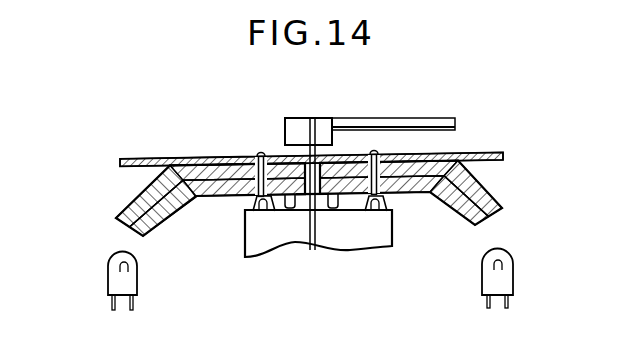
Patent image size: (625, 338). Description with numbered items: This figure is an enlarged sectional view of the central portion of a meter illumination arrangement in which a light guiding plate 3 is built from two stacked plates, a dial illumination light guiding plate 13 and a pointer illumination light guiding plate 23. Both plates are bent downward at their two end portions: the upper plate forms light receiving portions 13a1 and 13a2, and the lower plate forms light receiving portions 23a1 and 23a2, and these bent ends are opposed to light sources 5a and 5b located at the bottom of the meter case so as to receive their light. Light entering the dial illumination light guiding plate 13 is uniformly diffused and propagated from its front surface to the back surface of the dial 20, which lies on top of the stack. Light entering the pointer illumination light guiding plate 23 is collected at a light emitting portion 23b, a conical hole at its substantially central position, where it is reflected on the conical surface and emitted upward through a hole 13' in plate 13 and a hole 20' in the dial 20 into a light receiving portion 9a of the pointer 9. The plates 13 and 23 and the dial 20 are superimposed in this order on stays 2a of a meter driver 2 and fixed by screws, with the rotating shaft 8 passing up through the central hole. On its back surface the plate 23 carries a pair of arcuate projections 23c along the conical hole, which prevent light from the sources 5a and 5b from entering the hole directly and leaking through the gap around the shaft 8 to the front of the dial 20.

The light guiding plate 3 is at (126, 198).
The dial 20 is at (292, 139).
The dial illumination light guiding plate 13 is at (306, 146).
The light receiving portion 13a1 is at (112, 216).
The light receiving portion 13a2 is at (487, 193).
The pointer illumination light guiding plate 23 is at (202, 197).
The light receiving portion 23a1 is at (163, 214).
The light receiving portion 23a2 is at (458, 198).
The light emitting portion 23b is at (322, 197).
The arcuate projections 23c is at (290, 208).
The hole 13' is at (229, 142).
The hole 20' is at (384, 132).
The light receiving portion of pointer 9a is at (290, 146).
The pointer 9 is at (455, 125).
The rotating shaft 8 is at (317, 118).
The meter driver 2 is at (266, 214).
The stays 2a is at (256, 198).
The light source 5a is at (108, 278).
The light source 5b is at (513, 278).